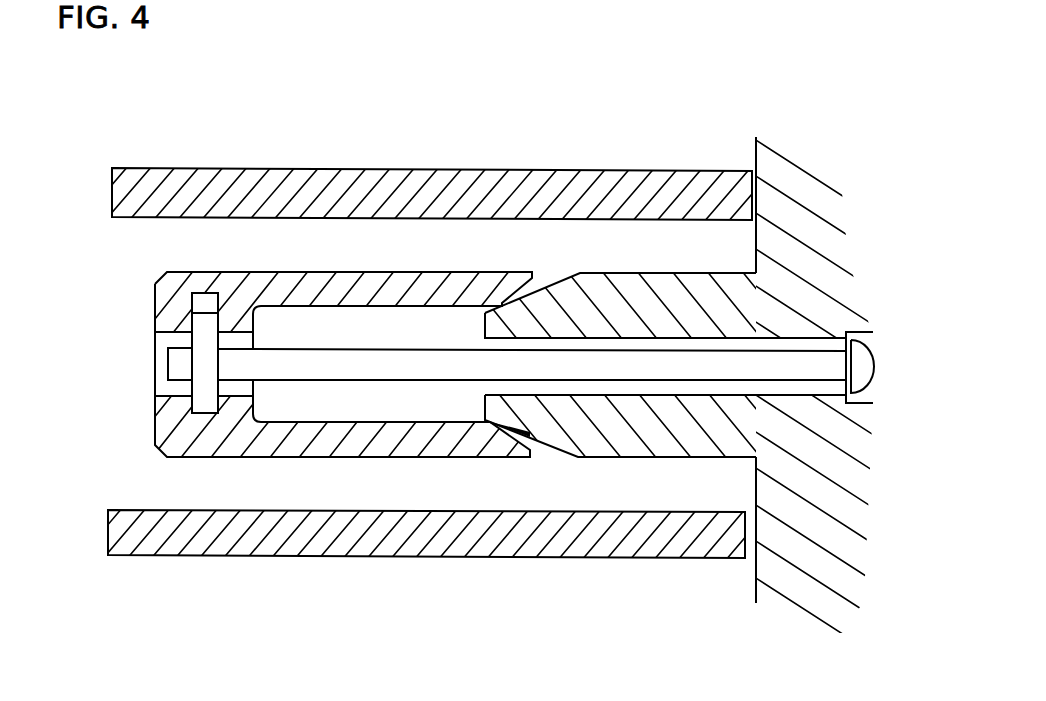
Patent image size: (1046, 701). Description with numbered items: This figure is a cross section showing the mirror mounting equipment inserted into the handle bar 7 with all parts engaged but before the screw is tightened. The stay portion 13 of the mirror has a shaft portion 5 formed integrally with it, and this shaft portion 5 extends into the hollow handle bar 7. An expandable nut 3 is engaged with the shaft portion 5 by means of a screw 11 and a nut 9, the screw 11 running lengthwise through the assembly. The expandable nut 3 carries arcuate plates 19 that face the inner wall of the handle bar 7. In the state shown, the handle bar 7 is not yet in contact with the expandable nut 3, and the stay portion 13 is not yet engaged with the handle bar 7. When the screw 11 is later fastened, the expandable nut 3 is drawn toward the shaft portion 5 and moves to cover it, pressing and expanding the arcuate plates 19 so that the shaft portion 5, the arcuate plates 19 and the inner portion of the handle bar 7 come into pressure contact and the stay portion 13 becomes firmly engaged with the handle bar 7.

The expandable nut 3 is at (242, 272).
The shaft portion 5 is at (620, 435).
The handle bar 7 is at (288, 187).
The nut 9 is at (208, 403).
The screw 11 is at (360, 372).
The stay portion 13 is at (798, 550).
The arcuate plates 19 is at (465, 290).